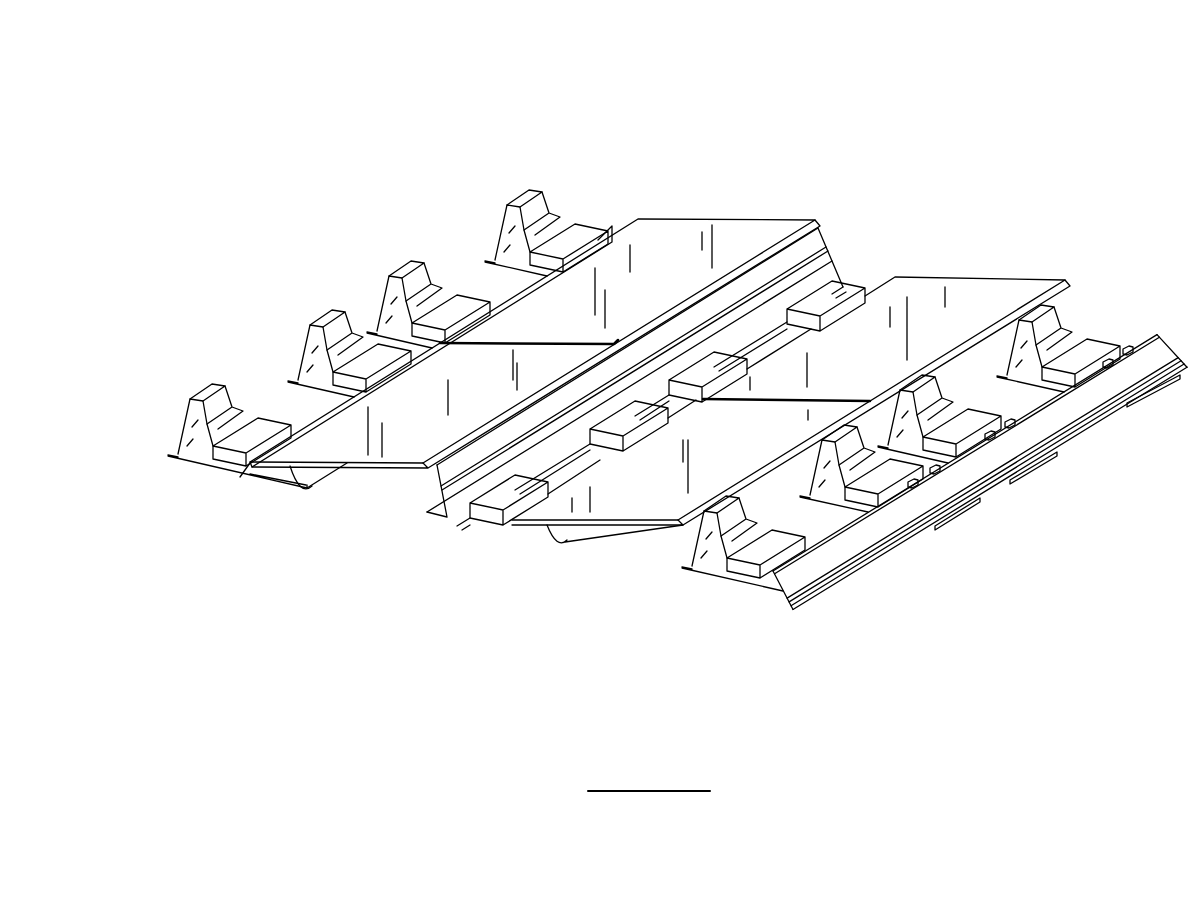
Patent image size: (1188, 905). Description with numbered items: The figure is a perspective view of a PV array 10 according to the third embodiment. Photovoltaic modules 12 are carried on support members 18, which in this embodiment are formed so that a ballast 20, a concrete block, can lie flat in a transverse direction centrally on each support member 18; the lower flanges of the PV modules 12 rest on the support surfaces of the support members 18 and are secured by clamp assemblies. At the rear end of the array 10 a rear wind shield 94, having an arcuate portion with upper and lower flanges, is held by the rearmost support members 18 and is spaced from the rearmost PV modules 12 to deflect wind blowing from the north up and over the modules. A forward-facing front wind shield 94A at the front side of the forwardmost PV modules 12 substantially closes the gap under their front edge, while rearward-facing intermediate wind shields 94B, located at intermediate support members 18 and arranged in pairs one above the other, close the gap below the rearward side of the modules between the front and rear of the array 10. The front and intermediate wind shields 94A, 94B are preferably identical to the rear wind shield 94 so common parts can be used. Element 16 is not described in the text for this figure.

The PV array 10 is at (905, 200).
The PV module 12 is at (959, 277).
The support 16 is at (709, 585).
The support member 18 is at (688, 572).
The ballast 20 is at (480, 515).
The rear wind shield 94 is at (795, 588).
The front wind shield 94A is at (238, 477).
The intermediate wind shield 94B is at (433, 483).